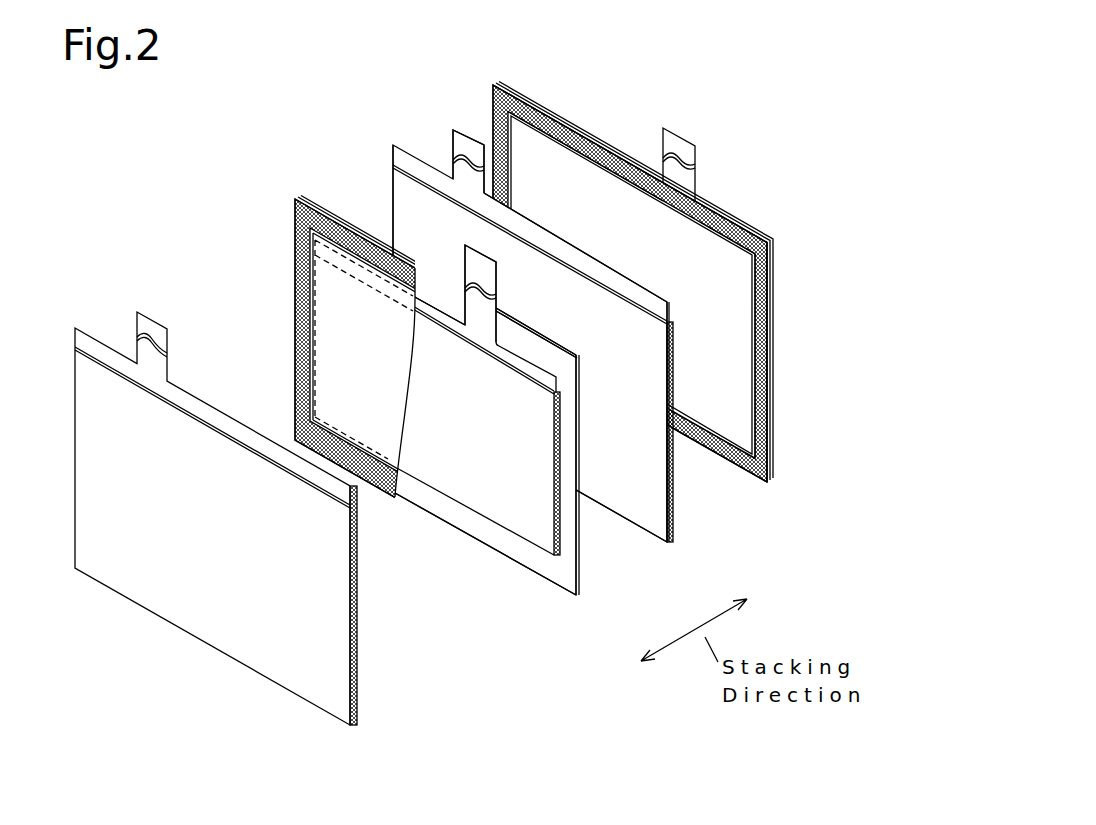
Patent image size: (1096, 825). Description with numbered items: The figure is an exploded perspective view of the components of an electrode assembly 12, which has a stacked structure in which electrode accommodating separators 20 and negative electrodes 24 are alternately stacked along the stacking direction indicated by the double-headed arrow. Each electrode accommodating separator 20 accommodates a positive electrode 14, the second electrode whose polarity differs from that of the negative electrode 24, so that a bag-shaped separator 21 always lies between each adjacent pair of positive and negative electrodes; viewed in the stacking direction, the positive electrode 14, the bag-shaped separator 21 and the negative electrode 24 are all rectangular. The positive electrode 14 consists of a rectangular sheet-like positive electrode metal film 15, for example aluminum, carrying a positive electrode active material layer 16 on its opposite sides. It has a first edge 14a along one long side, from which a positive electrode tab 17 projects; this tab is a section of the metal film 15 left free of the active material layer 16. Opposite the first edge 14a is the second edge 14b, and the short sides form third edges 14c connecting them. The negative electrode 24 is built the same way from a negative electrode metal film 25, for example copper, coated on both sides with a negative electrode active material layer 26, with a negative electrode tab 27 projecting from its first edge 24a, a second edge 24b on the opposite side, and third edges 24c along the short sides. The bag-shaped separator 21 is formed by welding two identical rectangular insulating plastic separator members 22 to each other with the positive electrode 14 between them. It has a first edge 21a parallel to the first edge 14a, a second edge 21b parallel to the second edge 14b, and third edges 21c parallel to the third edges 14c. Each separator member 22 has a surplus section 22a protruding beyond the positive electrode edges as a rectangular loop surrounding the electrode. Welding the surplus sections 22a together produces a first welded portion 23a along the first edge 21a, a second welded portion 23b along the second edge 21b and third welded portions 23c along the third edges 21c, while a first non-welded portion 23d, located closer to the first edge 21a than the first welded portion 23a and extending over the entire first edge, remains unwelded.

The electrode assembly 12 is at (750, 123).
The positive electrode 14 is at (434, 420).
The first edge 14a is at (455, 332).
The second edge 14b is at (446, 501).
The third edges 14c is at (555, 464).
The positive electrode metal film 15 is at (557, 382).
The positive electrode active material layer 16 is at (557, 522).
The positive electrode tab 17 is at (497, 278).
The electrode accommodating separator 20 is at (528, 319).
The bag-shaped separator 21 is at (491, 87).
The first edge 21a is at (642, 166).
The second edge 21b is at (753, 484).
The third edges 21c is at (773, 348).
The separator member 22 is at (580, 147).
The surplus section 22a is at (740, 233).
The first welded portion 23a is at (514, 227).
The second welded portion 23b is at (760, 450).
The third welded portions 23c is at (774, 320).
The first non-welded portion 23d is at (715, 216).
The negative electrode 24 is at (564, 341).
The first edge 24a is at (610, 268).
The second edge 24b is at (666, 542).
The third edges 24c is at (392, 197).
The negative electrode metal film 25 is at (647, 300).
The negative electrode active material layer 26 is at (670, 468).
The negative electrode tab 27 is at (458, 141).